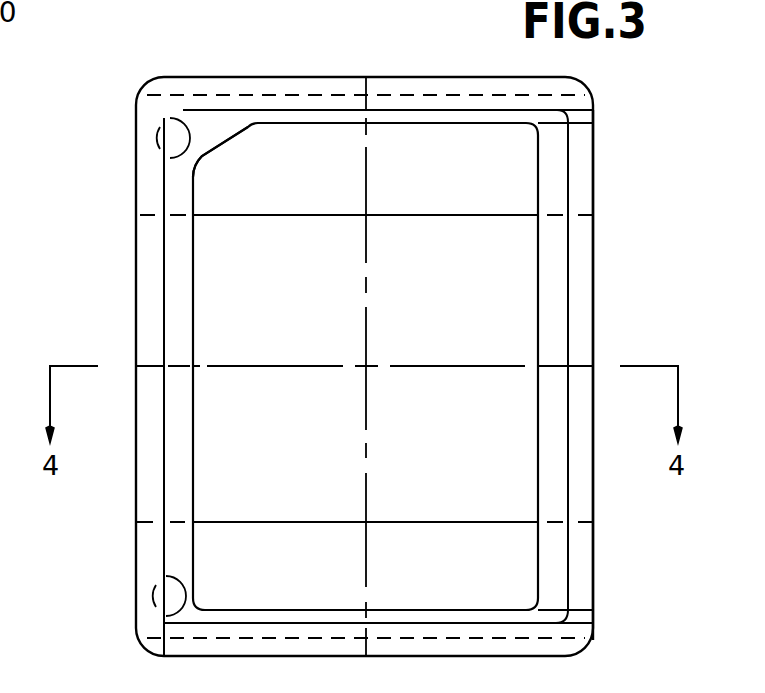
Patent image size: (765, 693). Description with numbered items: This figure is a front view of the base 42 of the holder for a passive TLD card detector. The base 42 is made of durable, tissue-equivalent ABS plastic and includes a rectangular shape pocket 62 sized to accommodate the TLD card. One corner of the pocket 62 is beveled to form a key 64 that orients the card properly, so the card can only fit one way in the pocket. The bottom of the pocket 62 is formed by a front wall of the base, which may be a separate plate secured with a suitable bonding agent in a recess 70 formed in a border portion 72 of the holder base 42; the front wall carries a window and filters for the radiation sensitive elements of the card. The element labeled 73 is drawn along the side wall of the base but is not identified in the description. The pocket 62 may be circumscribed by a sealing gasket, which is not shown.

The base 42 is at (136, 275).
The pocket 62 is at (537, 253).
The key 64 is at (223, 148).
The recess 70 is at (567, 462).
The side wall 73 is at (594, 154).
The border portion 72 is at (403, 0).